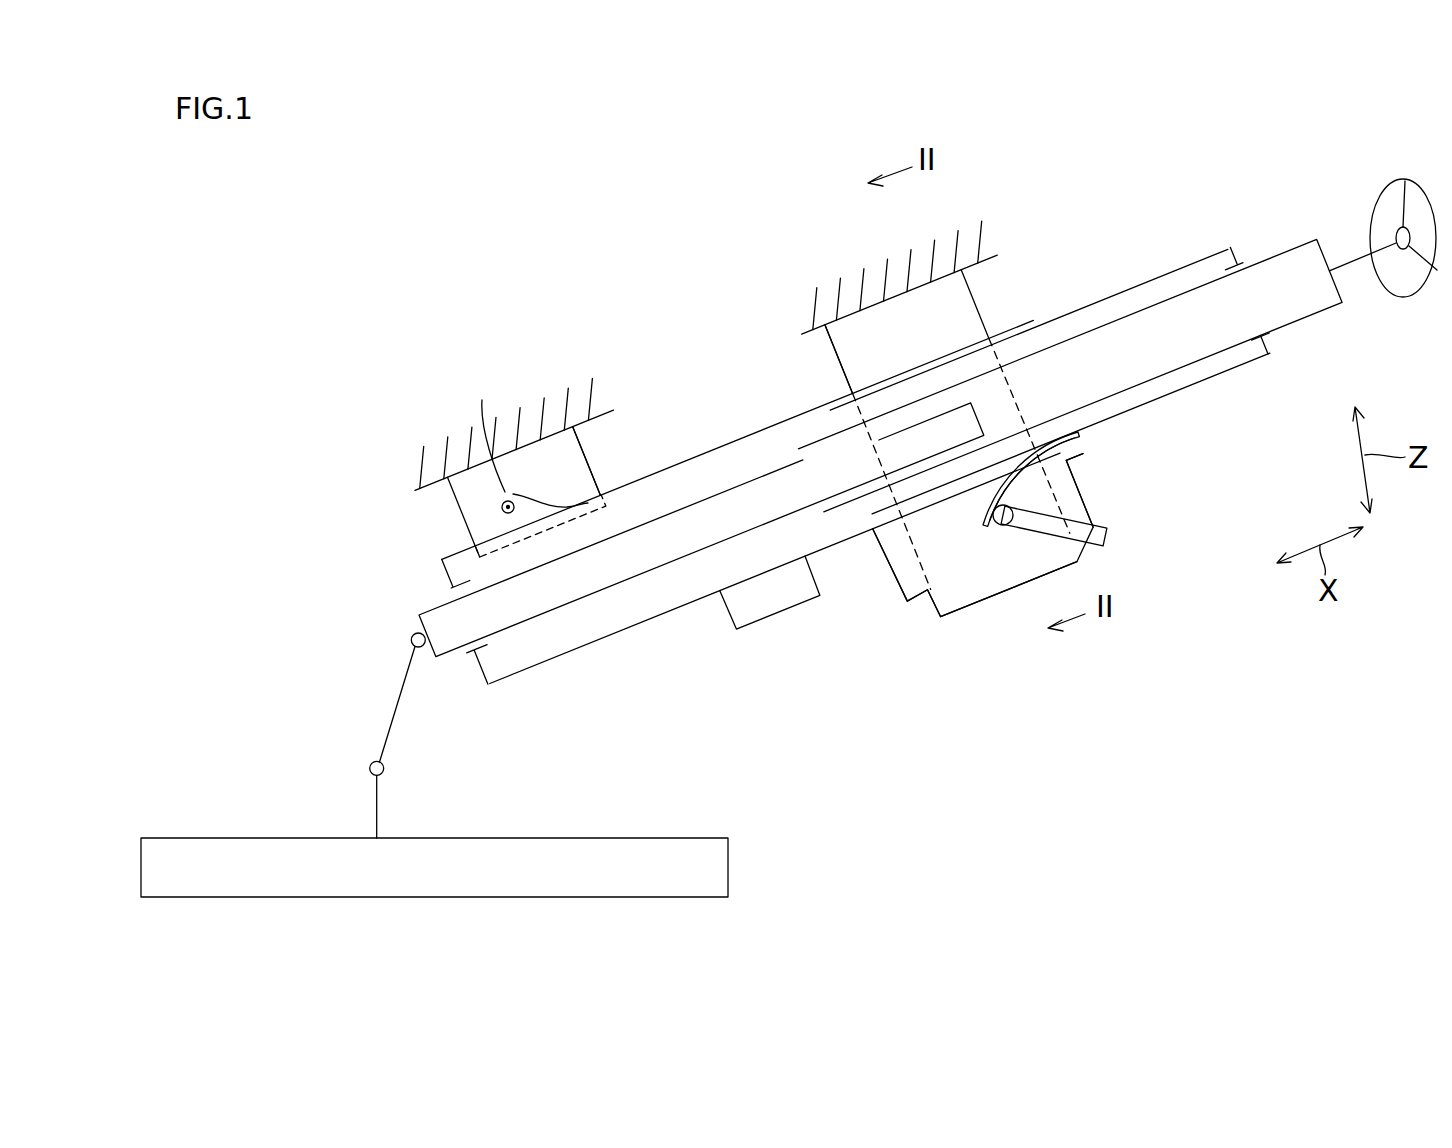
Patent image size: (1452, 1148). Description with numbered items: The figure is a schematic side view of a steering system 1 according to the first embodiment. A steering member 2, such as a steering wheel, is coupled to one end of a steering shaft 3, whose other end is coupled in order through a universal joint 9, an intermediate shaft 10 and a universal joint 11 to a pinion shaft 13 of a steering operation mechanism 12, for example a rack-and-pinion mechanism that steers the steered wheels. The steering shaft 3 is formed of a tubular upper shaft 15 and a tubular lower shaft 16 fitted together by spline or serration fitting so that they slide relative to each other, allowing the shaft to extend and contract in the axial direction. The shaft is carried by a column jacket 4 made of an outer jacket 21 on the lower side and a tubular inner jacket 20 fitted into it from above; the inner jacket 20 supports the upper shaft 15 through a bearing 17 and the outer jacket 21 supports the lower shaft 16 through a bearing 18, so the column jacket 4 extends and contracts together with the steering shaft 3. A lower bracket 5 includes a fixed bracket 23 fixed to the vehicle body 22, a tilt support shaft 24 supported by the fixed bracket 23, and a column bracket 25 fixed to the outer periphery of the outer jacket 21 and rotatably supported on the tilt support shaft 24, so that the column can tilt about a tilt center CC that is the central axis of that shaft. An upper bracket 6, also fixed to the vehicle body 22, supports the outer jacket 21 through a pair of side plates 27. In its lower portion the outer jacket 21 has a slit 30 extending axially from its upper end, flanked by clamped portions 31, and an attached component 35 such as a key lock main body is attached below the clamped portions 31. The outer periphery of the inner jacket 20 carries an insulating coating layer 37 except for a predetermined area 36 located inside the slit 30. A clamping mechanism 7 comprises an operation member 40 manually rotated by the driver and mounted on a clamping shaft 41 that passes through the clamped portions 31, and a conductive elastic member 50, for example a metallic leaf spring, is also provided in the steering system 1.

The steering system 1 is at (877, 904).
The steering member 2 is at (1383, 182).
The steering shaft 3 is at (880, 436).
The column jacket 4 is at (814, 447).
The lower bracket 5 is at (527, 463).
The upper bracket 6 is at (920, 416).
The clamping mechanism 7 is at (952, 528).
The universal joint 9 is at (411, 638).
The intermediate shaft 10 is at (398, 702).
The universal joint 11 is at (370, 768).
The steering operation mechanism 12 is at (730, 867).
The pinion shaft 13 is at (380, 808).
The upper shaft 15 is at (1317, 313).
The lower shaft 16 is at (575, 602).
The bearing 17 is at (1238, 252).
The bearing 18 is at (447, 588).
The inner jacket 20 is at (1220, 380).
The outer jacket 21 is at (657, 622).
The vehicle body 22 is at (555, 410).
The fixed bracket 23 is at (567, 468).
The tilt support shaft 24 is at (525, 437).
The column bracket 25 is at (503, 530).
The tilt center CC is at (499, 507).
The side plates 27 is at (857, 350).
The slit 30 is at (903, 562).
The clamped portions 31 is at (890, 582).
The attached component 35 is at (755, 622).
The predetermined area 36 is at (1067, 433).
The coating layer 37 is at (1150, 407).
The operation member 40 is at (1107, 537).
The clamping shaft 41 is at (998, 527).
The conductive elastic member 50 is at (995, 490).